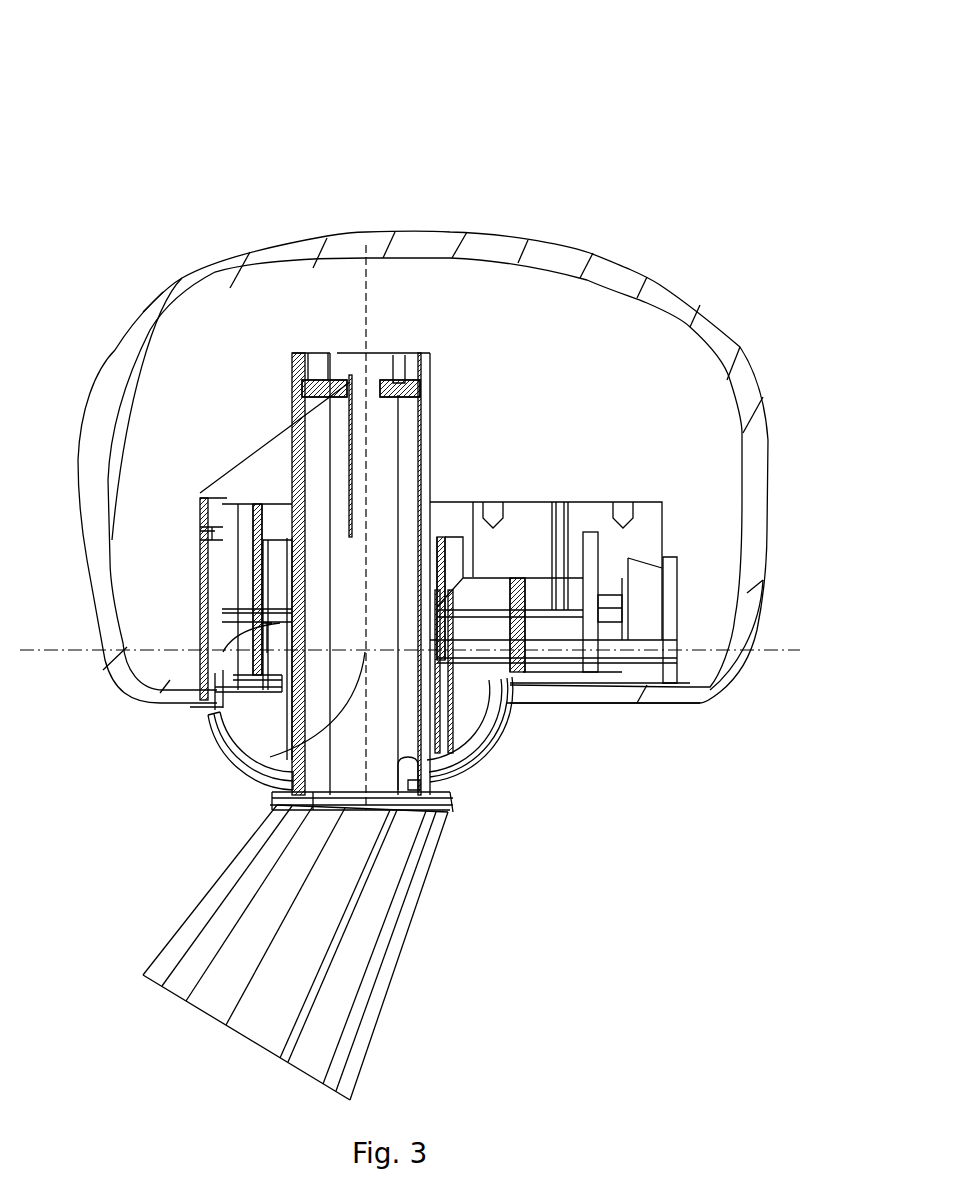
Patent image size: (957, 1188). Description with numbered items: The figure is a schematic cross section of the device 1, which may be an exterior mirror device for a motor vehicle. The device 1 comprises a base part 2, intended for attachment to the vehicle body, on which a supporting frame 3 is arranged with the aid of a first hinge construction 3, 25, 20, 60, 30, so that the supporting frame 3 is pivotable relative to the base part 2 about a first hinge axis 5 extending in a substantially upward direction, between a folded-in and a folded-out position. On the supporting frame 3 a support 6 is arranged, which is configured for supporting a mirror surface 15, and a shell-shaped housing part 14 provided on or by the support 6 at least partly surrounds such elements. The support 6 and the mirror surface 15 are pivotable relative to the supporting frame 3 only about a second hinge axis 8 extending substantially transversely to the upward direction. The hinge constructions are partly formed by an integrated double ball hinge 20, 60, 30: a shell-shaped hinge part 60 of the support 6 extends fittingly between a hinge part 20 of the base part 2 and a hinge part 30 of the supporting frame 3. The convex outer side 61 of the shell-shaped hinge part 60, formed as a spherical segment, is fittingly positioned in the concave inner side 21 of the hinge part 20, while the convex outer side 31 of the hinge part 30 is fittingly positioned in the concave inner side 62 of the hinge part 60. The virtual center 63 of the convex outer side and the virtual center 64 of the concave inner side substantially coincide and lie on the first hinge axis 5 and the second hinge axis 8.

The device 1 is at (597, 130).
The base part 2 is at (310, 937).
The supporting frame 3 is at (532, 522).
The first hinge axis 5 is at (366, 432).
The support 6 is at (500, 703).
The second hinge axis 8 is at (79, 657).
The shell-shaped housing part 14 is at (180, 280).
The mirror surface 15 is at (580, 318).
The hinge part of the base part 20 is at (460, 780).
The concave inner side 21 is at (410, 813).
The first hinge construction part 25 is at (423, 493).
The hinge part of the supporting frame 30 is at (462, 775).
The convex outer side 31 is at (473, 740).
The shell-shaped hinge part 60 is at (529, 727).
The convex outer side 61 is at (492, 732).
The concave inner side 62 is at (540, 690).
The virtual center 63 is at (273, 757).
The virtual center 64 is at (200, 759).